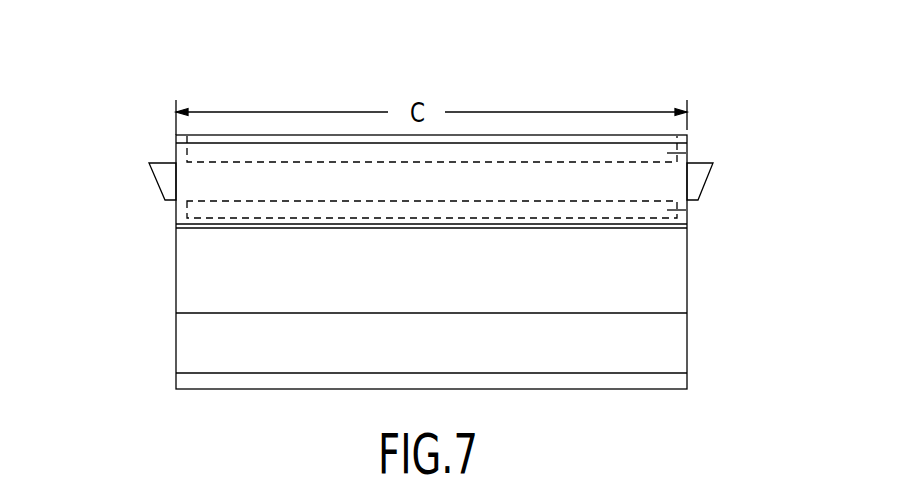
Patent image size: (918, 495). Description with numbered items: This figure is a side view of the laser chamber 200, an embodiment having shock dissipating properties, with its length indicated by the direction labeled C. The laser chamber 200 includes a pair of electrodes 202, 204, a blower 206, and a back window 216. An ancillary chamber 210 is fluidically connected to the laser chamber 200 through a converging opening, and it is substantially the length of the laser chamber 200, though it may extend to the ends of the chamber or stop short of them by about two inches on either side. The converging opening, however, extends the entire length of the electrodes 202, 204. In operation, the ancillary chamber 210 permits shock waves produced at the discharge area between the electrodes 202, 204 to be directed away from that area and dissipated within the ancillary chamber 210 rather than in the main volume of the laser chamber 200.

The laser chamber 200 is at (700, 86).
The electrode 202 is at (690, 153).
The electrode 204 is at (690, 212).
The blower 206 is at (677, 345).
The ancillary chamber 210 is at (174, 222).
The back window 216 is at (157, 183).